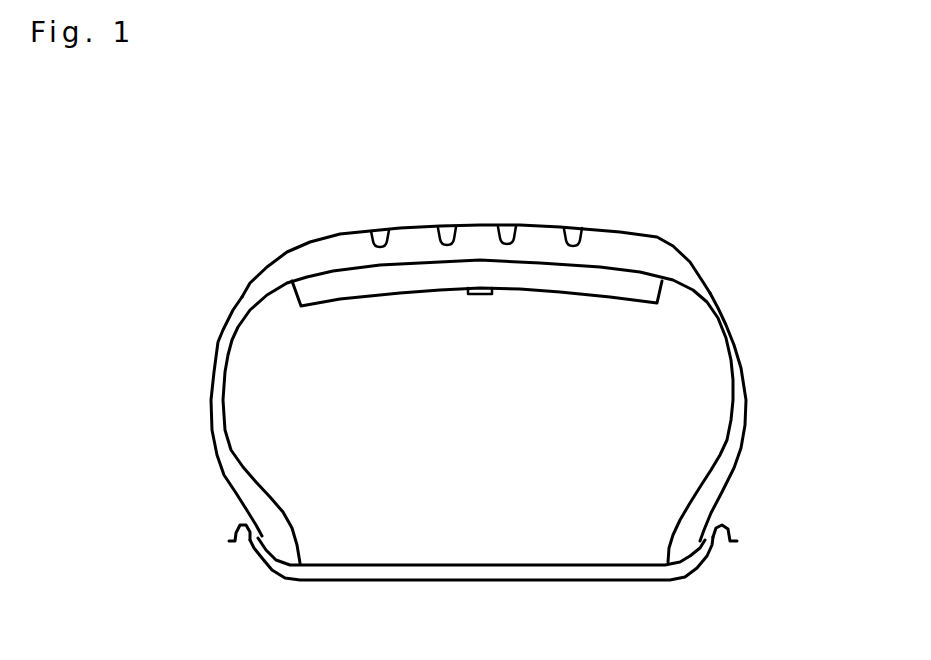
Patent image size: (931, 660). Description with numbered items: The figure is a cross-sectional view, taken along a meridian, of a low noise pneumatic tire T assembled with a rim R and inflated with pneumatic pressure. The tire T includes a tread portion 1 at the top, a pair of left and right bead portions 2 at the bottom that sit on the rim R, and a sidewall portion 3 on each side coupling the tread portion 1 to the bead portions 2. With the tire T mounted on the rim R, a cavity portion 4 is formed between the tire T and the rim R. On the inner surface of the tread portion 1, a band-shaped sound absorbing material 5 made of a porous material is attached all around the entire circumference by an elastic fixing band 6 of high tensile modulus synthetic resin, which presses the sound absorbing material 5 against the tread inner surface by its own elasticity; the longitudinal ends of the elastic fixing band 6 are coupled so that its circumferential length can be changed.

The tread portion 1 is at (478, 238).
The bead portions 2 is at (231, 517).
The sidewall portion 3 is at (201, 390).
The cavity portion 4 is at (477, 456).
The band-shaped sound absorbing material 5 is at (383, 283).
The elastic fixing band 6 is at (490, 293).
The low noise pneumatic tire T is at (703, 218).
The rim R is at (452, 575).